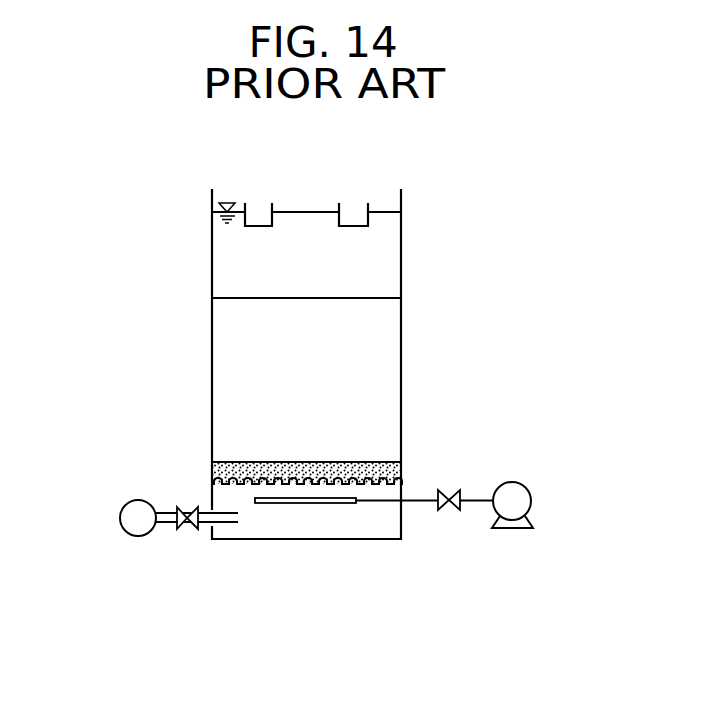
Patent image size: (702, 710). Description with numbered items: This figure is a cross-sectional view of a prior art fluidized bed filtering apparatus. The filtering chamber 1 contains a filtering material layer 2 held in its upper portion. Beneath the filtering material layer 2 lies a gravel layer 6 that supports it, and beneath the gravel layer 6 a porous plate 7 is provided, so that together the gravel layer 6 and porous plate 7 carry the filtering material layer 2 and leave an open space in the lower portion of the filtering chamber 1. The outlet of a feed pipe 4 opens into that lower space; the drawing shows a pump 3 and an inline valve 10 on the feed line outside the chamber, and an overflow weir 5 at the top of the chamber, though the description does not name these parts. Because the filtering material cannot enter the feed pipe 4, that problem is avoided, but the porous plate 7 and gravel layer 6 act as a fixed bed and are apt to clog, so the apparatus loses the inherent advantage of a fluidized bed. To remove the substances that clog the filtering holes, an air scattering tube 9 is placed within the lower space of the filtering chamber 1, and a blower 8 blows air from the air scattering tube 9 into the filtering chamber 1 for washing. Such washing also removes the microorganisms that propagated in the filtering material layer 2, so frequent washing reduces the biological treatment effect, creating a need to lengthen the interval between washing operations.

The filtering chamber 1 is at (402, 258).
The filtering material layer 2 is at (390, 355).
The feed pump 3 is at (120, 518).
The feed pipe 4 is at (229, 522).
The overflow weir 5 is at (368, 208).
The gravel layer 6 is at (401, 462).
The porous plate 7 is at (401, 485).
The blower 8 is at (531, 501).
The air scattering tube 9 is at (295, 503).
The inlet valve 10 is at (187, 530).